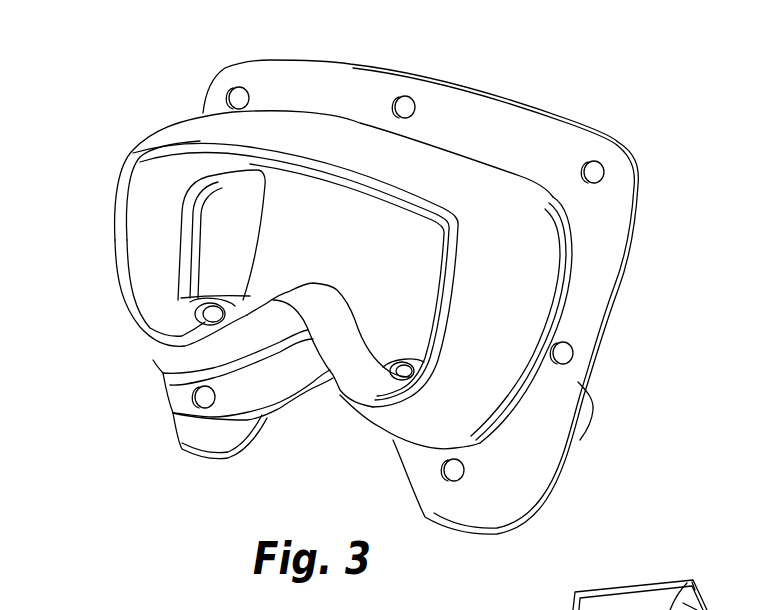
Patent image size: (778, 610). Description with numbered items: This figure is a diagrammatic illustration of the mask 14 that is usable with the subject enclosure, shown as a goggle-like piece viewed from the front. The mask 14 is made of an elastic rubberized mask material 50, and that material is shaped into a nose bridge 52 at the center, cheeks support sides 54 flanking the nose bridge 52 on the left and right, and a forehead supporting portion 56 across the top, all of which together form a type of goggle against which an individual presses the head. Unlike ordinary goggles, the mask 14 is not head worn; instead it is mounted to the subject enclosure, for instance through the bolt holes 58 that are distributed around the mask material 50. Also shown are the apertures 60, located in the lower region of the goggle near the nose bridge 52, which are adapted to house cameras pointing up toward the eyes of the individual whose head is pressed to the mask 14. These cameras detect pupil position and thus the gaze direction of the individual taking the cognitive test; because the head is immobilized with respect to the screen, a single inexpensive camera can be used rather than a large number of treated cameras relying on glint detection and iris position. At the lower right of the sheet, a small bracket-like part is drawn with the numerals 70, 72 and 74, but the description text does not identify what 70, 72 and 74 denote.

The mask 14 is at (625, 331).
The elastic rubberized mask material 50 is at (520, 268).
The nose bridge 52 is at (290, 300).
The cheeks support sides 54 is at (128, 314).
The forehead supporting portion 56 is at (267, 147).
The bolt holes 58 is at (230, 97).
The apertures 60 is at (228, 311).
The strap buckle 70 is at (643, 609).
The buckle housing 72 is at (597, 590).
The buckle lever 74 is at (687, 583).